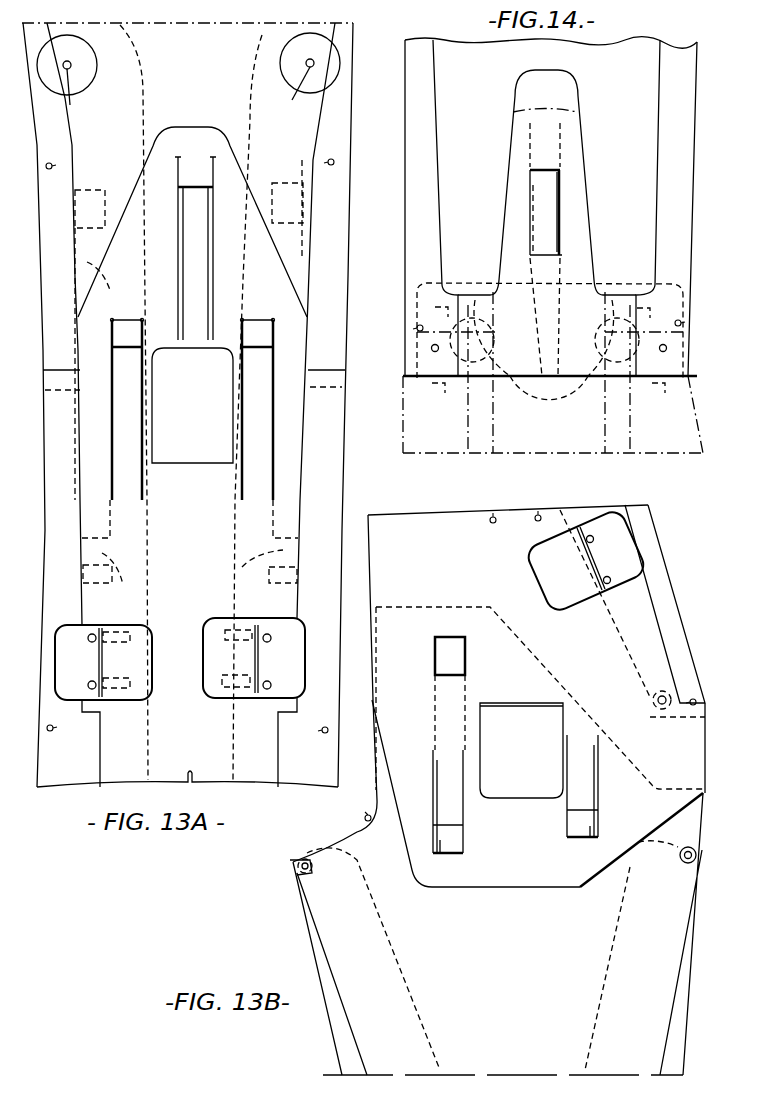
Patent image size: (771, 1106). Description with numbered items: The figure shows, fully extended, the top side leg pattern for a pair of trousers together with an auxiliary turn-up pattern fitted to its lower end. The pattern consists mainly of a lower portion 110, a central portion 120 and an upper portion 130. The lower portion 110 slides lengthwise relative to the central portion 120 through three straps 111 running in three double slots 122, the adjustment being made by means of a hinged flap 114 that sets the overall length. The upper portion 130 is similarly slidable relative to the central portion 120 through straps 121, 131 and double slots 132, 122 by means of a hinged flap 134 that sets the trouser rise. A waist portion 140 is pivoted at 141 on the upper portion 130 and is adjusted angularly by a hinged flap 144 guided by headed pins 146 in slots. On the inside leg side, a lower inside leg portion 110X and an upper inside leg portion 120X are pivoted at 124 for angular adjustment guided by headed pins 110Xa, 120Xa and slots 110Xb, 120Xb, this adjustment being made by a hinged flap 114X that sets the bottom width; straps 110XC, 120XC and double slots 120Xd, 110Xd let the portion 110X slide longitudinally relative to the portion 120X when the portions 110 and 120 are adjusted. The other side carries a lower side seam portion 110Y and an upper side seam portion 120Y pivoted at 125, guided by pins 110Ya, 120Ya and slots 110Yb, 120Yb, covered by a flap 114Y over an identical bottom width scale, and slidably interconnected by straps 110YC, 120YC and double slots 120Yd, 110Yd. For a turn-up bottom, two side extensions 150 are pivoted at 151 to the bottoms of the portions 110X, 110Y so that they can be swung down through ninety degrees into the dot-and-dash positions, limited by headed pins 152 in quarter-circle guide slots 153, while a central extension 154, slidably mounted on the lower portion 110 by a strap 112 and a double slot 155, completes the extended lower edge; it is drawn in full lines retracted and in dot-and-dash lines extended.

In FIG. 13A, the lower portion 110 is at (197, 574).
In FIG. 14, the lower portion 110 is at (478, 94).
In FIG. 13A, the lower inside leg portion 110X is at (88, 775).
In FIG. 14, the lower inside leg portion 110X is at (427, 152).
In FIG. 13A, the lower side seam portion 110Y is at (328, 775).
In FIG. 14, the lower side seam portion 110Y is at (645, 208).
In FIG. 13A, the headed pin 110Xa is at (93, 703).
In FIG. 13A, the headed pin 110Ya is at (268, 698).
In FIG. 13A, the slot 110Xb is at (136, 618).
In FIG. 13A, the slot 110Yb is at (247, 632).
In FIG. 13A, the strap 110XC is at (100, 523).
In FIG. 13A, the strap 110YC is at (283, 507).
In FIG. 13A, the double slot 110Xd is at (127, 574).
In FIG. 13A, the double slot 110Yd is at (256, 570).
In FIG. 13A, the strap 111 is at (202, 228).
In FIG. 14, the strap 112 is at (540, 202).
In FIG. 13A, the hinged flap 114 is at (200, 414).
In FIG. 13A, the hinged flap 114X is at (143, 669).
In FIG. 13A, the flap 114Y is at (246, 669).
In FIG. 13A, the central portion 120 is at (199, 86).
In FIG. 13B, the central portion 120 is at (513, 1016).
In FIG. 13B, the upper inside leg portion 120X is at (338, 1017).
In FIG. 13A, the upper side seam portion 120Y is at (337, 216).
In FIG. 13B, the upper side seam portion 120Y is at (653, 1030).
In FIG. 13A, the headed pin 120Xa is at (98, 97).
In FIG. 13A, the headed pin 120Ya is at (290, 96).
In FIG. 13A, the slot 120Xb is at (72, 63).
In FIG. 13A, the slot 120Yb is at (306, 62).
In FIG. 13A, the strap 120XC is at (113, 291).
In FIG. 13A, the strap 120YC is at (297, 253).
In FIG. 13A, the double slot 120Xd is at (105, 208).
In FIG. 13A, the double slot 120Yd is at (290, 183).
In FIG. 13B, the strap 121 is at (445, 652).
In FIG. 13A, the double slot 122 is at (194, 160).
In FIG. 13B, the double slot 122 is at (442, 848).
In FIG. 13B, the pivot 124 is at (302, 870).
In FIG. 13B, the pivot 125 is at (683, 860).
In FIG. 13B, the upper portion 130 is at (432, 576).
In FIG. 13B, the strap 131 is at (580, 793).
In FIG. 13B, the double slot 132 is at (450, 676).
In FIG. 13B, the hinged flap 134 is at (533, 774).
In FIG. 13B, the waist portion 140 is at (658, 578).
In FIG. 13B, the pivot 141 is at (653, 703).
In FIG. 13B, the hinged flap 144 is at (538, 560).
In FIG. 13B, the headed pin 146 is at (608, 585).
In FIG. 14, the side extension 150 is at (440, 293).
In FIG. 14, the pivot 151 is at (431, 349).
In FIG. 14, the headed pin 152 is at (577, 387).
In FIG. 14, the quarter-circle guide slot 153 is at (440, 386).
In FIG. 14, the central extension 154 is at (567, 95).
In FIG. 14, the double slot 155 is at (540, 255).